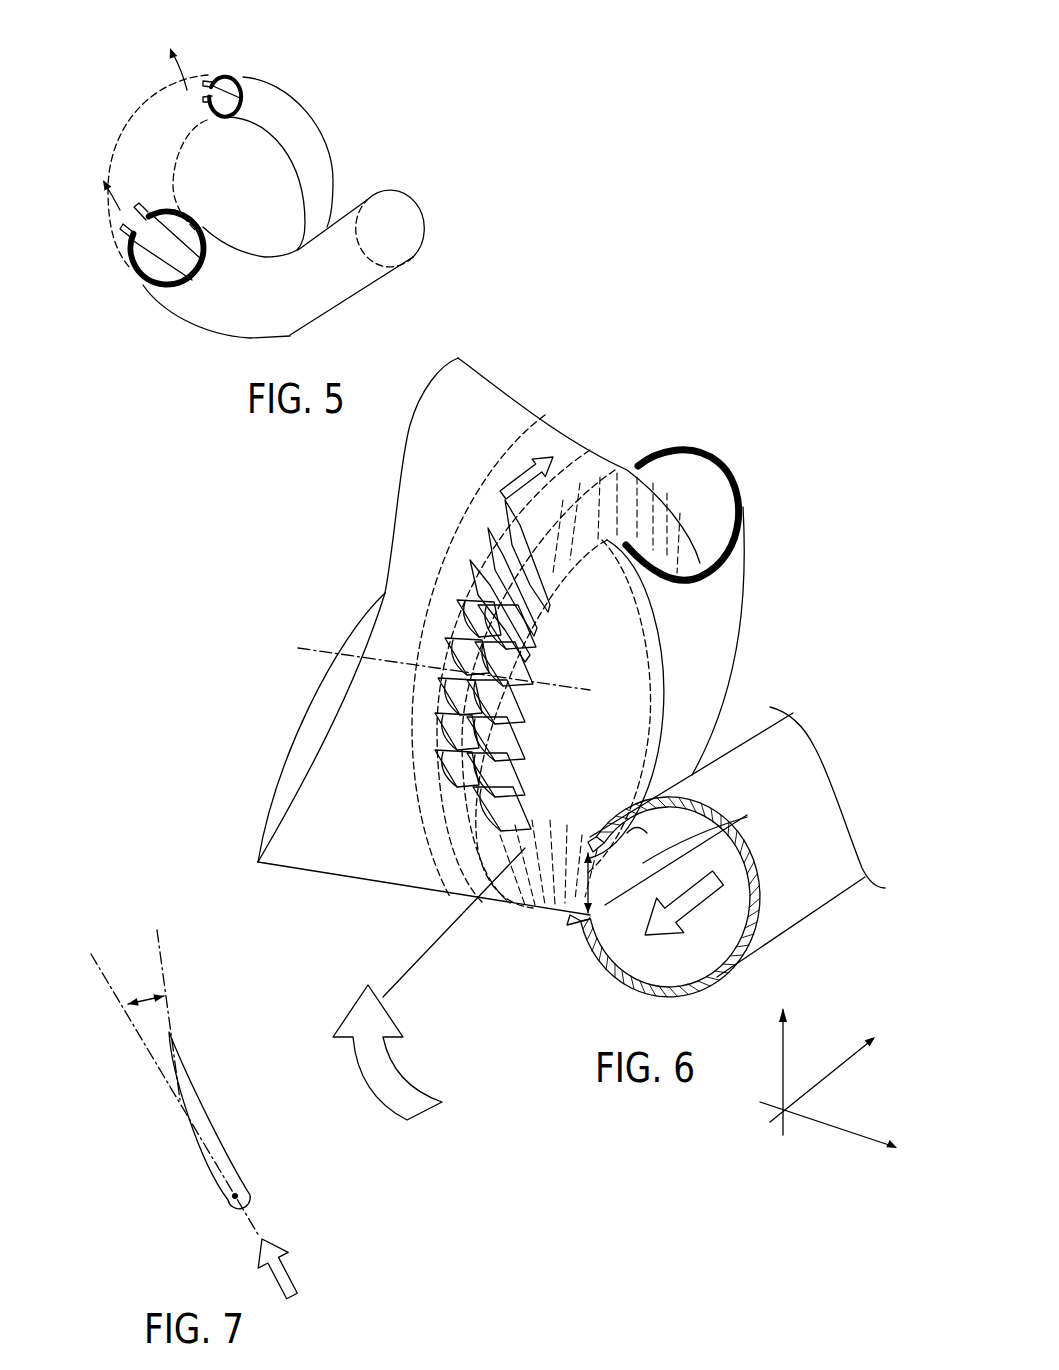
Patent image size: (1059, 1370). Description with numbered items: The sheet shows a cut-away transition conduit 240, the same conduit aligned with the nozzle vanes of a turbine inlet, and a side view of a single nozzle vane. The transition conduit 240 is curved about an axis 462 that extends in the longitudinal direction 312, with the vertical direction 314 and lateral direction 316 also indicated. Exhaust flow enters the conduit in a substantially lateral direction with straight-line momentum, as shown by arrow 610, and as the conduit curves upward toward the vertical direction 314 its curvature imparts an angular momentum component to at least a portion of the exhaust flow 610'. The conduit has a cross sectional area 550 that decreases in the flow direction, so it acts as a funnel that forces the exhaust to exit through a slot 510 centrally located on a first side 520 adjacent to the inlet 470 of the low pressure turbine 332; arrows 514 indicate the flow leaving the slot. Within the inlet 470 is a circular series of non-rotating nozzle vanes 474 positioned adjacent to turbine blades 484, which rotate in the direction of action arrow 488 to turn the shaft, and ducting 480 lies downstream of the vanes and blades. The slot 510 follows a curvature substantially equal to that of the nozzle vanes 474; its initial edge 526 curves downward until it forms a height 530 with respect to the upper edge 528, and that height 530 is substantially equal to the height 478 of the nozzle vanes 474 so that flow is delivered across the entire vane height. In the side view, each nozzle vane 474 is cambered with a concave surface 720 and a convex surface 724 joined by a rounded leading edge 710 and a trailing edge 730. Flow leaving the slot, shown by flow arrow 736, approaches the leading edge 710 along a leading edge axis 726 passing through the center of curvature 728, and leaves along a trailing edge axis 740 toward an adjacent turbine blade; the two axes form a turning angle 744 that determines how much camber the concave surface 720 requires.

In FIG. 5, the transition conduit 240 is at (177, 302).
In FIG. 6, the transition conduit 240 is at (727, 603).
In FIG. 6, the longitudinal direction 312 is at (843, 1132).
In FIG. 6, the vertical direction 314 is at (783, 1045).
In FIG. 6, the lateral direction 316 is at (835, 1070).
In FIG. 6, the low pressure turbine 332 is at (590, 418).
In FIG. 6, the axis 462 is at (308, 650).
In FIG. 6, the inlet 470 is at (497, 988).
In FIG. 6, the nozzle vanes 474 is at (510, 677).
In FIG. 7, the nozzle vanes 474 is at (159, 1121).
In FIG. 6, the height of the nozzle vanes 478 is at (510, 752).
In FIG. 6, the ducting 480 is at (308, 865).
In FIG. 6, the turbine blades 484 is at (457, 603).
In FIG. 6, the action arrow 488 is at (540, 475).
In FIG. 5, the slot 510 is at (228, 92).
In FIG. 6, the slot 510 is at (640, 500).
In FIG. 5, the arrows 514 is at (173, 67).
In FIG. 5, the first side 520 is at (198, 110).
In FIG. 6, the first side 520 is at (638, 467).
In FIG. 6, the initial edge 526 is at (747, 815).
In FIG. 6, the upper edge 528 is at (650, 845).
In FIG. 6, the height of the slot 530 is at (590, 880).
In FIG. 5, the cross sectional area 550 is at (153, 260).
In FIG. 6, the cross sectional area 550 is at (693, 483).
In FIG. 6, the exhaust flow 610 is at (684, 920).
In FIG. 6, the exhaust flow 610' is at (387, 1070).
In FIG. 7, the leading edge 710 is at (248, 1214).
In FIG. 7, the concave surface 720 is at (216, 1157).
In FIG. 7, the convex surface 724 is at (194, 1154).
In FIG. 7, the leading edge axis 726 is at (109, 984).
In FIG. 7, the center of curvature 728 is at (241, 1196).
In FIG. 7, the trailing edge 730 is at (167, 1034).
In FIG. 7, the flow arrow 736 is at (294, 1275).
In FIG. 7, the trailing edge axis 740 is at (157, 943).
In FIG. 7, the turning angle 744 is at (144, 998).